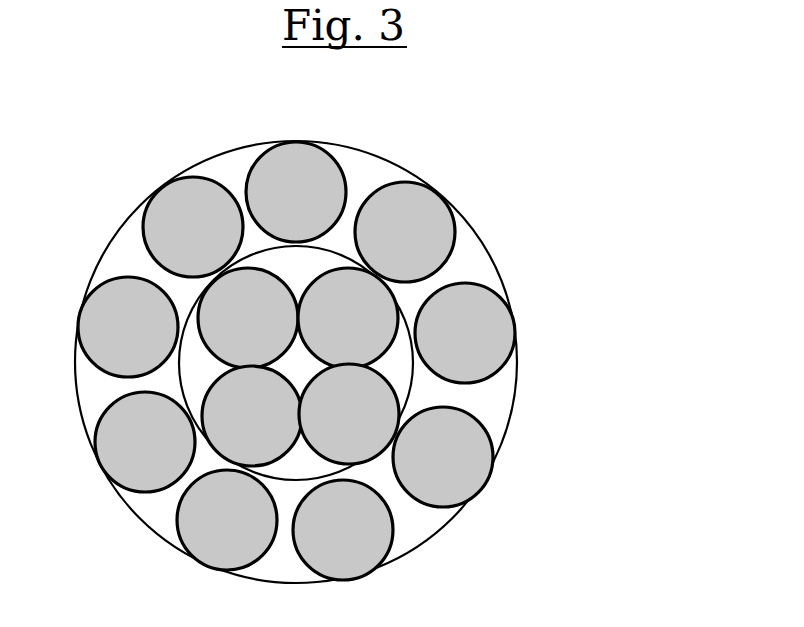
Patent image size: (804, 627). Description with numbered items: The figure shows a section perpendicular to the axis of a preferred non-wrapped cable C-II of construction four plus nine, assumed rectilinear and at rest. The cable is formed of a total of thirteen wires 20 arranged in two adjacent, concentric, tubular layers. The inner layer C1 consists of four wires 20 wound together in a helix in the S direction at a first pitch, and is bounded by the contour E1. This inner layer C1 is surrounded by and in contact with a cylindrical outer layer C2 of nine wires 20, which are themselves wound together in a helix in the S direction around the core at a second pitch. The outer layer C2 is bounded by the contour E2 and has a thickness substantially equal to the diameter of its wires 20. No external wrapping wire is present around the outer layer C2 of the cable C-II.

The wires 20 is at (348, 316).
The contour of inner layer C1 E1 is at (196, 301).
The contour of outer layer C2 E2 is at (430, 542).
The inner layer C1 is at (393, 370).
The outer layer C2 is at (163, 502).
The cable C-II is at (518, 239).